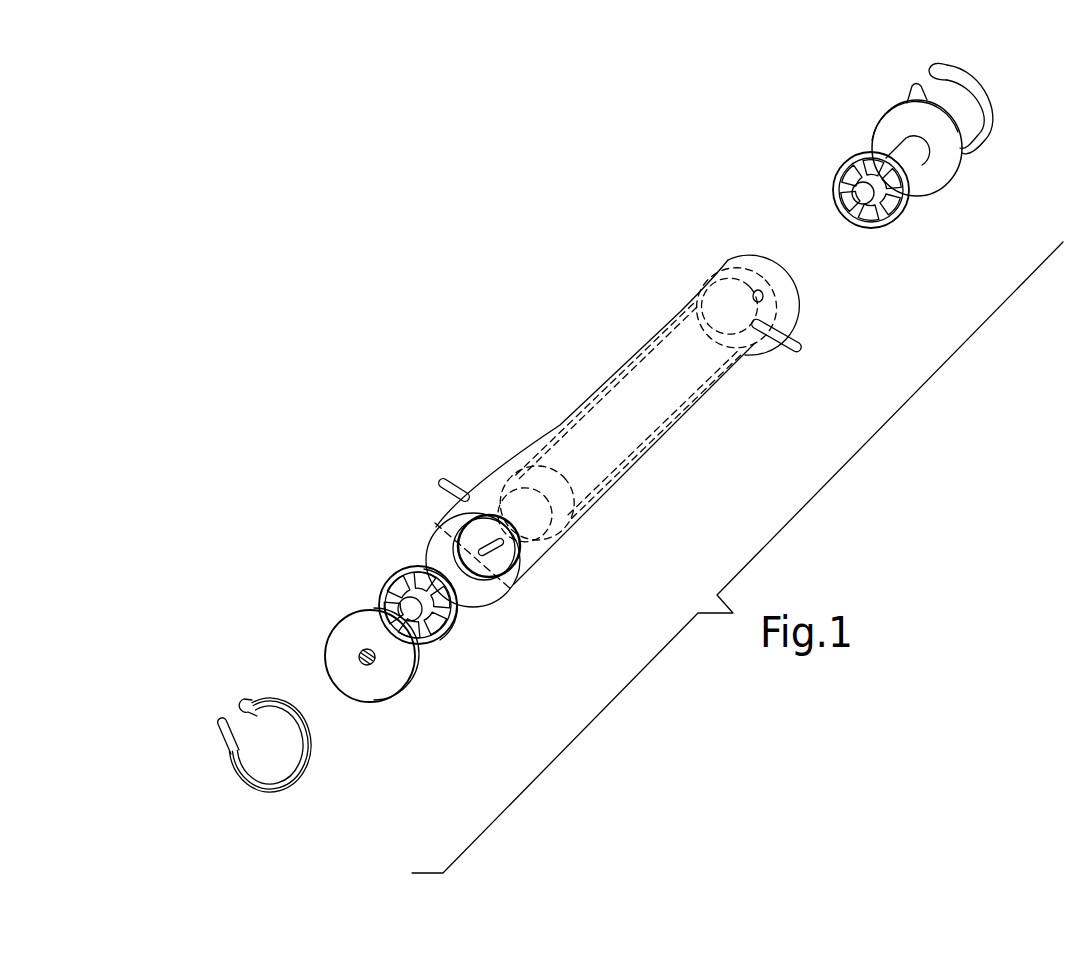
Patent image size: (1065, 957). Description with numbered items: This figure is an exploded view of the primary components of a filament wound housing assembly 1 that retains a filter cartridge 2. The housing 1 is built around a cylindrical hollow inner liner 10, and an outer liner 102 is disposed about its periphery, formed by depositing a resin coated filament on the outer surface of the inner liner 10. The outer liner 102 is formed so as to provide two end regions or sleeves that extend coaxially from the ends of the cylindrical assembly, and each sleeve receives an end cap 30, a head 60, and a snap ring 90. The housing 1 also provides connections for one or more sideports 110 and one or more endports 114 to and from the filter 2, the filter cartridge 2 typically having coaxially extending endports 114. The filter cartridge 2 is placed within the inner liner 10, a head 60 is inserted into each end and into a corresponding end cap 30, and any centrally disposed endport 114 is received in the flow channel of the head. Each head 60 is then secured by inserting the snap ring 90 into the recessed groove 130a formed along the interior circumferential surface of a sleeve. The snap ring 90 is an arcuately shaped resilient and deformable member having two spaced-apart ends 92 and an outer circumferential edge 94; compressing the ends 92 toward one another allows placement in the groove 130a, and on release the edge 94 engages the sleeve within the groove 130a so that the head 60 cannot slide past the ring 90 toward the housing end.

The filament wound housing assembly 1 is at (413, 274).
The filter cartridge 2 is at (653, 402).
The inner liner 10 is at (593, 393).
The end cap 30 is at (543, 477).
The head 60 is at (410, 545).
The snap ring 90 is at (930, 72).
The ends 92 is at (252, 708).
The outer circumferential edge 94 is at (268, 697).
The outer liner 102 is at (641, 342).
The sideport 110 is at (455, 487).
The endport 114 is at (752, 298).
The recessed groove 130a is at (492, 572).